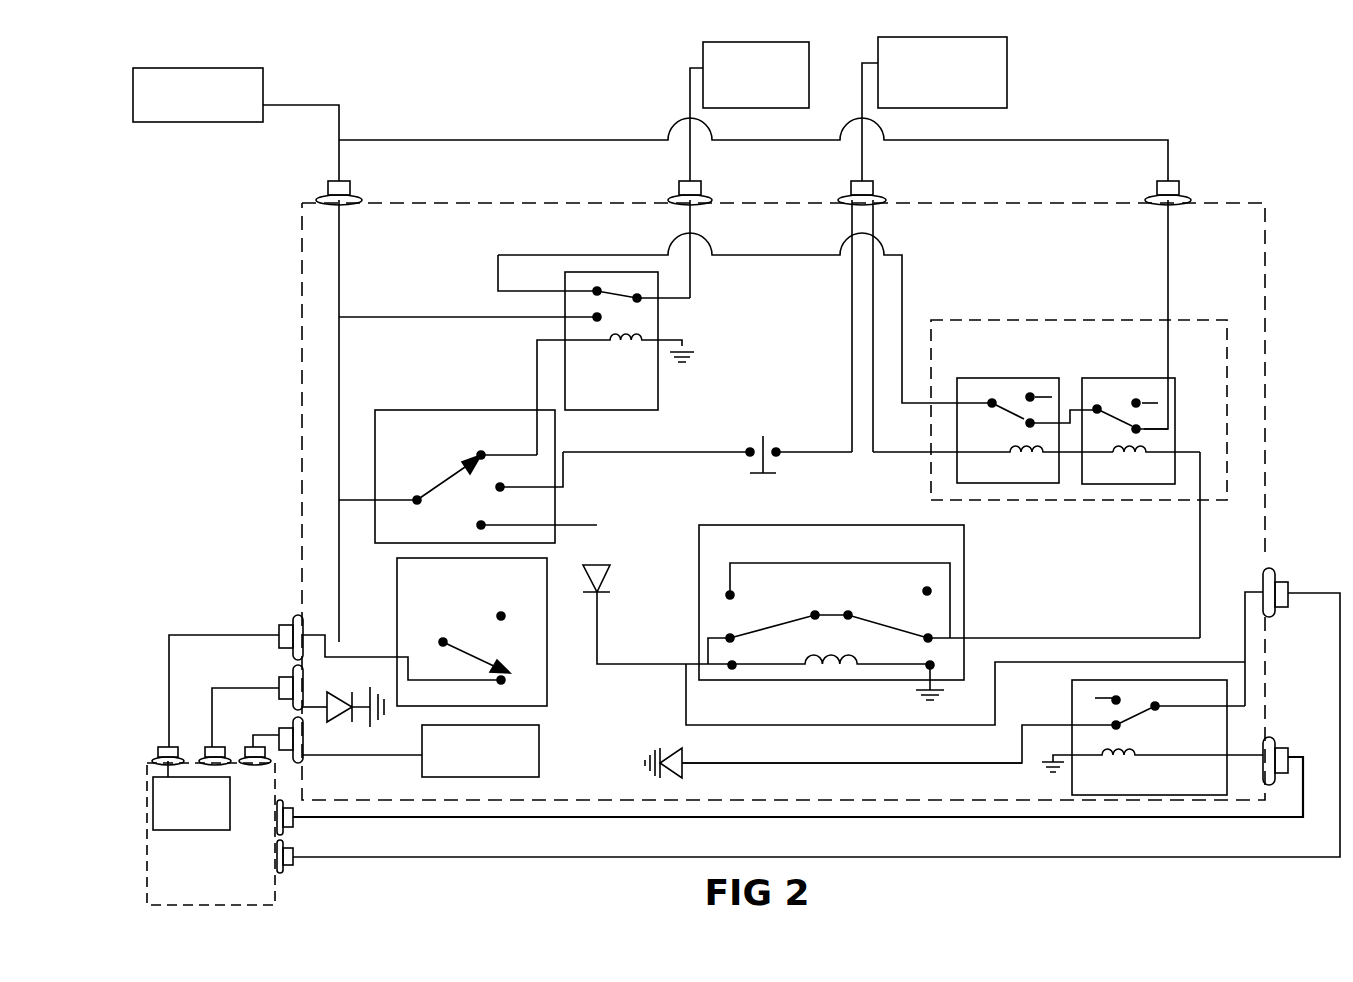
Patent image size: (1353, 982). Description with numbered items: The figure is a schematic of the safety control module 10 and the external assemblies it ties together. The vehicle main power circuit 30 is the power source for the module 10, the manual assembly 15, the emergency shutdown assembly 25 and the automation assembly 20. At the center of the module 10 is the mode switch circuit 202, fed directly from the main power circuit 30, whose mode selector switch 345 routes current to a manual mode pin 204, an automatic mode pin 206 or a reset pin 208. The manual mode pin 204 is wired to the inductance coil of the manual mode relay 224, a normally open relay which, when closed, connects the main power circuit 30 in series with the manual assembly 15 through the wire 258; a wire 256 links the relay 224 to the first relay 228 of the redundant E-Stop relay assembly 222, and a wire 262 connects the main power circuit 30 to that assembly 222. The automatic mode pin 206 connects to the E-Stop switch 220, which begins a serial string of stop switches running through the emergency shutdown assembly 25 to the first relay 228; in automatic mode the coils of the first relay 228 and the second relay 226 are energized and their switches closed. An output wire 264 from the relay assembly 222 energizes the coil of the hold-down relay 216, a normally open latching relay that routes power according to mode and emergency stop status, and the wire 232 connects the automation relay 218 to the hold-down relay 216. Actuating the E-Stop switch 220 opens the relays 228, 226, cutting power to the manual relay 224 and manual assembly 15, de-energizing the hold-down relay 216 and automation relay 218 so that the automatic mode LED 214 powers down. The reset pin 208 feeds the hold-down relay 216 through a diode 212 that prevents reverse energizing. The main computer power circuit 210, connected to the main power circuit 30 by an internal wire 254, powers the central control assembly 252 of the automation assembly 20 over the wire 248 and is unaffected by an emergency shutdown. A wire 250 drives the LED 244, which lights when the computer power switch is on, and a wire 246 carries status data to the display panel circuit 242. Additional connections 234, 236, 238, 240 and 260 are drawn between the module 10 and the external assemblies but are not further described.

The safety control module 10 is at (1232, 220).
The manual assembly 15 is at (703, 56).
The automation assembly 20 is at (272, 885).
The emergency shutdown assembly 25 is at (1007, 74).
The vehicle main power circuit 30 is at (263, 80).
The mode switch circuit 202 is at (471, 473).
The manual mode pin 204 is at (537, 432).
The automatic mode pin 206 is at (555, 490).
The reset pin 208 is at (537, 527).
The main computer power circuit 210 is at (530, 678).
The diode 212 is at (600, 563).
The automatic mode LED 214 is at (684, 776).
The hold-down relay 216 is at (965, 542).
The automation relay 218 is at (1213, 733).
The E-Stop switch 220 is at (774, 474).
The redundant E-Stop relay assembly 222 is at (1058, 393).
The manual mode relay 224 is at (648, 313).
The Relay 2 226 is at (1090, 382).
The Relay 1 228 is at (970, 392).
The wire 232 is at (736, 722).
The connection line 234 is at (843, 765).
The connector 236 is at (1245, 640).
The connection line 238 is at (872, 818).
The connection line 240 is at (1050, 858).
The display panel circuit 242 is at (537, 740).
The LED 244 is at (340, 720).
The wire 246 is at (340, 757).
The wire 248 is at (169, 665).
The wire 250 is at (212, 716).
The central control assembly 252 is at (219, 798).
The internal wire 254 is at (340, 260).
The wire 256 is at (760, 255).
The wire 258 is at (692, 212).
The connector 260 is at (852, 222).
The wire 262 is at (1166, 282).
The output wire 264 is at (1199, 569).
The mode selector switch 345 is at (462, 535).